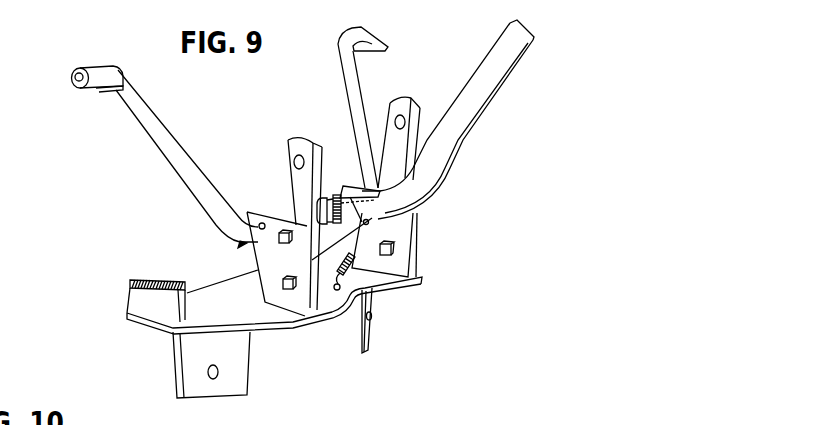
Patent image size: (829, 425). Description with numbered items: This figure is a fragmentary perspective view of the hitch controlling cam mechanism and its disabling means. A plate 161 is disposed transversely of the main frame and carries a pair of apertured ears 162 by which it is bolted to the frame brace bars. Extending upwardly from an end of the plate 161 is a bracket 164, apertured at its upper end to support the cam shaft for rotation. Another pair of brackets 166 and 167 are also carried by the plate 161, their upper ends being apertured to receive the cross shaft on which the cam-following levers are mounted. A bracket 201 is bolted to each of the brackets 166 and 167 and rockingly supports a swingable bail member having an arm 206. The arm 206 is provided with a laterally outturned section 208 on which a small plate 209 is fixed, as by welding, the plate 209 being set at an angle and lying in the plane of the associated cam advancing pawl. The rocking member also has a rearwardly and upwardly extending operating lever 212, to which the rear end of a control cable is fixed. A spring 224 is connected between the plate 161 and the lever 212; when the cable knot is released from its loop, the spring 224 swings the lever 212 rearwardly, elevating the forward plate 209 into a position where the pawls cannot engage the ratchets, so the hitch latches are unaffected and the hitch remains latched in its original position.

The plate 161 is at (293, 327).
The apertured ears 162 is at (235, 388).
The bracket 164 is at (137, 297).
The bracket 166 is at (300, 137).
The bracket 167 is at (408, 104).
The bracket 201 is at (350, 178).
The arm 206 is at (165, 142).
The laterally outturned section 208 is at (74, 80).
The plate 209 is at (98, 71).
The operating lever 212 is at (490, 89).
The spring 224 is at (377, 288).